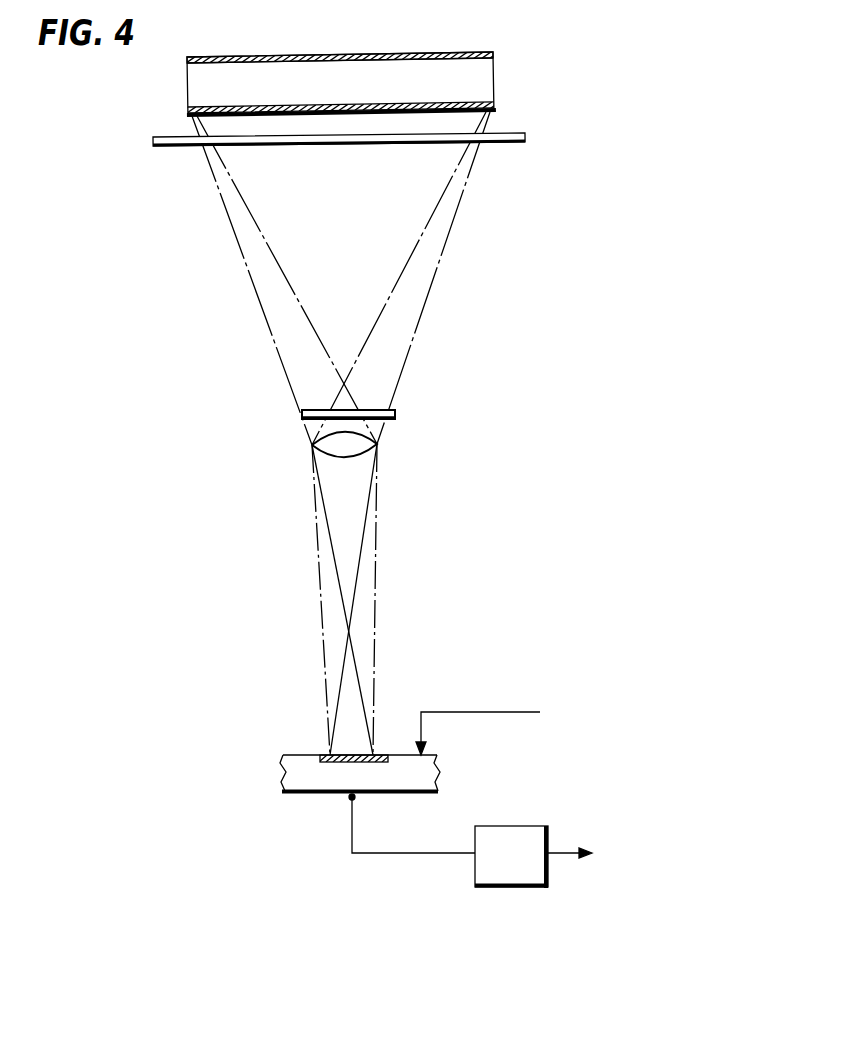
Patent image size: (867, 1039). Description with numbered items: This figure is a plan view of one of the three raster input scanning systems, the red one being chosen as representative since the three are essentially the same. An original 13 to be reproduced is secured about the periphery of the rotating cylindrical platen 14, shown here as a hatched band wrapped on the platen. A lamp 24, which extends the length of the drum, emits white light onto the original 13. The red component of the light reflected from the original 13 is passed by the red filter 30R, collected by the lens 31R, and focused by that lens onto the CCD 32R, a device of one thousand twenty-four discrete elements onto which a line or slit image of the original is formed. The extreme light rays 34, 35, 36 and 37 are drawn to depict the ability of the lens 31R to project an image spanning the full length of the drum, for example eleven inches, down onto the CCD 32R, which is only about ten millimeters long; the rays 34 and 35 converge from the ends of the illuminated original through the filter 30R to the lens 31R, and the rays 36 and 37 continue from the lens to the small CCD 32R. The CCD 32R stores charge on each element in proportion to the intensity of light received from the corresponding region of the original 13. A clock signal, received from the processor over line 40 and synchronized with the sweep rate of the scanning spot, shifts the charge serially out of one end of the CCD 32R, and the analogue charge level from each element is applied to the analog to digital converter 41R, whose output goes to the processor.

The original 13 is at (437, 53).
The cylindrical platen 14 is at (478, 75).
The lamp 24 is at (512, 134).
The red filter 30R is at (395, 415).
The lens 31R is at (380, 445).
The CCD 32R is at (328, 752).
The extreme light ray 34 is at (280, 354).
The extreme light ray 35 is at (412, 352).
The extreme light ray 36 is at (320, 578).
The extreme light ray 37 is at (378, 573).
The line 40 is at (442, 712).
The analog to digital converter 41R is at (518, 797).